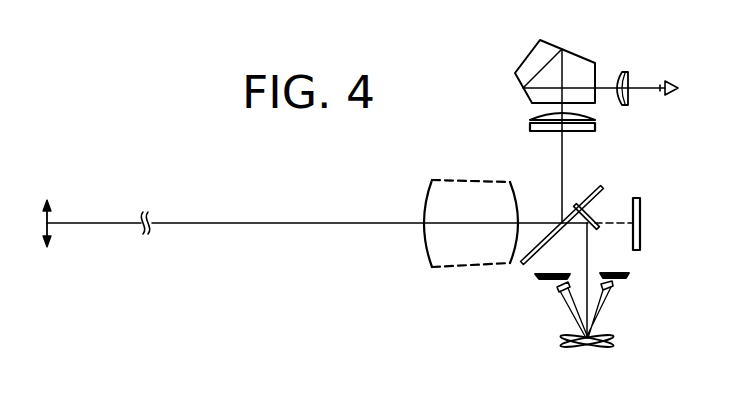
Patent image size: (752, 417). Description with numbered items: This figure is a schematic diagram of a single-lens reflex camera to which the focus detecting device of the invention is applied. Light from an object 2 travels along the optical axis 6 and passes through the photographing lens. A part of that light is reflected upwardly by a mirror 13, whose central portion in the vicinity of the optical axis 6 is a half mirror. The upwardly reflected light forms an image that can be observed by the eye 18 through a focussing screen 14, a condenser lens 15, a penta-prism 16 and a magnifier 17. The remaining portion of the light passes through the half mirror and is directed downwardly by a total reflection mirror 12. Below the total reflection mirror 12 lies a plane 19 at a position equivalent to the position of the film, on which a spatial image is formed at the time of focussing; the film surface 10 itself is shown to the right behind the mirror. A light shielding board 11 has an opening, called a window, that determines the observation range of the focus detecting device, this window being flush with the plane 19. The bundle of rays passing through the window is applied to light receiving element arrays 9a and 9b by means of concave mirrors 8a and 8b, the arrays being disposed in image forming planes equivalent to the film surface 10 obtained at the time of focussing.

The object 2 is at (49, 246).
The optical axis 6 is at (328, 224).
The light shielding board 11 is at (447, 266).
The penta-prism 16 is at (588, 64).
The magnifier 17 is at (628, 72).
The eye 18 is at (672, 83).
The condenser lens 15 is at (595, 122).
The focussing screen 14 is at (547, 132).
The mirror 13 is at (601, 190).
The total reflection mirror 12 is at (592, 223).
The film surface 10 is at (641, 212).
The plane 19 is at (593, 271).
The light receiving element array 9a is at (614, 289).
The light receiving element array 9b is at (562, 291).
The concave mirror 8a is at (597, 349).
The concave mirror 8b is at (569, 351).